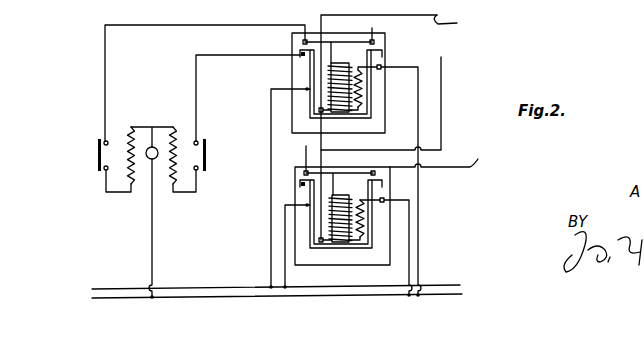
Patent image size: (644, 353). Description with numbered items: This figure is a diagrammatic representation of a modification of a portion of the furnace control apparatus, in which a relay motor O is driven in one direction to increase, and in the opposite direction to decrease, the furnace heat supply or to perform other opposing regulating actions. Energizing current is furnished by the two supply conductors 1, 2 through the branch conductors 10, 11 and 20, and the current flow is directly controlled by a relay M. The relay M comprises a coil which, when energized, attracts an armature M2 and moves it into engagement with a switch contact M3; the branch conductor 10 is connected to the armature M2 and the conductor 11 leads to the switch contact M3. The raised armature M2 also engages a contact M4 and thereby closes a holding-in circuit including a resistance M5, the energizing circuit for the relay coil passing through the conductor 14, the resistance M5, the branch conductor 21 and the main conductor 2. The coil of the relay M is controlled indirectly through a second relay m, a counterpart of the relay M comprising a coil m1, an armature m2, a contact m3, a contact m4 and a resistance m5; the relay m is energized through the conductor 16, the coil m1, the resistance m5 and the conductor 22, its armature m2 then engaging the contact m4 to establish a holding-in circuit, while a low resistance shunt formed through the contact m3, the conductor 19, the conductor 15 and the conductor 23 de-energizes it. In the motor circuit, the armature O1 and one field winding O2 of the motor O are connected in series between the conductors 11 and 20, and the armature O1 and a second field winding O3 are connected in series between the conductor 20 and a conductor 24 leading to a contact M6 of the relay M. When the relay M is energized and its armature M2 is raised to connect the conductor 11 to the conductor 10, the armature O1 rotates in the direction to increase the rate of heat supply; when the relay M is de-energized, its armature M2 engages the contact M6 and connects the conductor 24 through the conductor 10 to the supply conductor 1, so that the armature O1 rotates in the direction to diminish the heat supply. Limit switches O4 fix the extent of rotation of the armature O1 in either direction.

The supply conductor 1 is at (203, 288).
The supply conductor 2 is at (226, 296).
The branch conductor 10 is at (270, 227).
The conductor 11 is at (165, 26).
The conductor 14 is at (371, 30).
The conductor 15 is at (400, 125).
The conductor 16 is at (442, 155).
The conductor 19 is at (308, 152).
The branch conductor 20 is at (155, 247).
The branch conductor 21 is at (420, 190).
The conductor 22 is at (411, 225).
The conductor 23 is at (443, 60).
The conductor 24 is at (194, 70).
The relay motor O is at (155, 121).
The armature O1 is at (154, 159).
The field winding O2 is at (135, 178).
The field winding O3 is at (174, 172).
The limit switches O4 is at (97, 157).
The relay M is at (291, 101).
The armature M2 is at (372, 118).
The switch contact M3 is at (305, 38).
The contact M4 is at (376, 42).
The resistance M5 is at (358, 102).
The contact M6 is at (302, 57).
The relay m is at (304, 173).
The coil m1 is at (342, 243).
The armature m2 is at (318, 252).
The contact m3 is at (300, 182).
The contact m4 is at (376, 171).
The resistance m5 is at (363, 228).